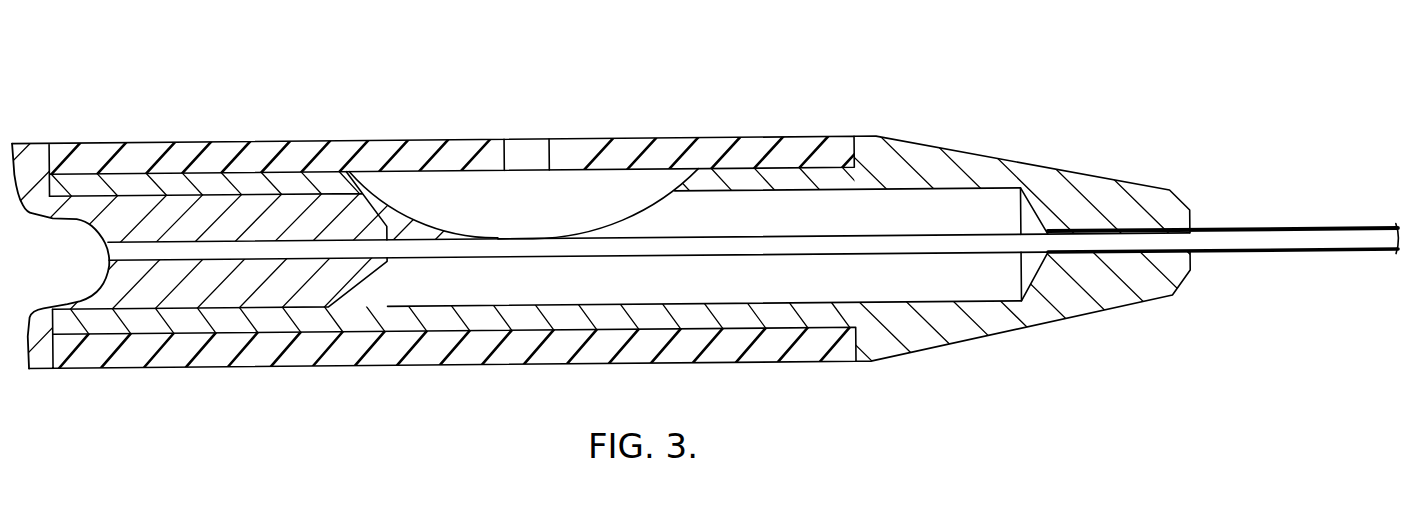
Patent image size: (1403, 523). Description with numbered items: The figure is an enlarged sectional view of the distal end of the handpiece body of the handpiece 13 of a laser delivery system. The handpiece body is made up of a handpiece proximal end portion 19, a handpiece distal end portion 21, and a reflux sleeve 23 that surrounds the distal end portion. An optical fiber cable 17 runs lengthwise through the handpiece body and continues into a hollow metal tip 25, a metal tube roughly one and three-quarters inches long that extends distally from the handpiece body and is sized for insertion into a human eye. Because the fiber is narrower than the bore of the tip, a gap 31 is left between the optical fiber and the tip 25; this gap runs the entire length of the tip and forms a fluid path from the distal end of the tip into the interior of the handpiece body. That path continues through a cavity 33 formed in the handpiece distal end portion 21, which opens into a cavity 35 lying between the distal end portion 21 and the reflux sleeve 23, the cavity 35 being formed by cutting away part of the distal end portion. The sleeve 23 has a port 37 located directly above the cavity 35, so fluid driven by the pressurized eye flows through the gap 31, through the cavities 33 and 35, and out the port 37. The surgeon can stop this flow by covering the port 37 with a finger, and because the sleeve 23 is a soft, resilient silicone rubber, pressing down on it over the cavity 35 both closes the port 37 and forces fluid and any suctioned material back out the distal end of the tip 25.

The handpiece 13 is at (494, 92).
The optical fiber cable 17 is at (687, 253).
The handpiece proximal end portion 19 is at (36, 142).
The handpiece distal end portion 21 is at (1031, 326).
The reflux sleeve 23 is at (705, 138).
The hollow metal tip 25 is at (1277, 254).
The gap 31 is at (1039, 256).
The cavity 33 is at (740, 222).
The cavity 35 is at (525, 215).
The port 37 is at (549, 150).